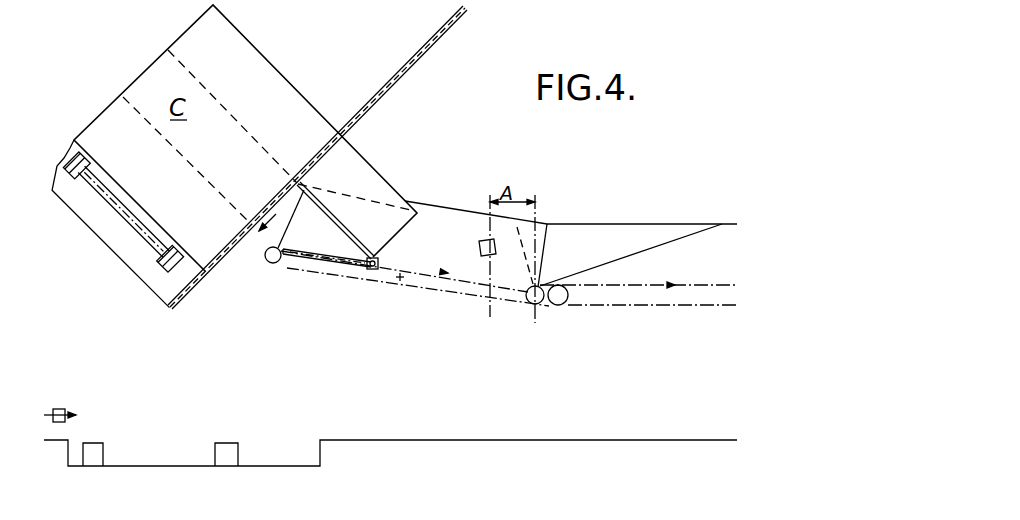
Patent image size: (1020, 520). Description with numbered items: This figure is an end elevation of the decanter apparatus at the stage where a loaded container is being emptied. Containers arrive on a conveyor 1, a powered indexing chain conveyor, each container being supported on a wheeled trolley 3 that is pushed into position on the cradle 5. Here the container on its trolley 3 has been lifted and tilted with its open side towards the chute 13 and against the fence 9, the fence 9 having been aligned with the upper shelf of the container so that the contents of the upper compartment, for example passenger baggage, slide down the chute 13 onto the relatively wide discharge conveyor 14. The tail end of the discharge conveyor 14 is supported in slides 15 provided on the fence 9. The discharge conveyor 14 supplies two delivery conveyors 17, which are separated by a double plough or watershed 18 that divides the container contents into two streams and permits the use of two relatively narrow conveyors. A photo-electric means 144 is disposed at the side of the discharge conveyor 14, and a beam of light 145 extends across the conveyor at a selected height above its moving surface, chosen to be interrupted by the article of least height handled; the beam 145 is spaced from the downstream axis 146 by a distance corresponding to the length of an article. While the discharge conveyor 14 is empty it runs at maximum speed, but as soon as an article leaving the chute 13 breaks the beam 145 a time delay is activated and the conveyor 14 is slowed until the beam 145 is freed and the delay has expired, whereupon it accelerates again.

The conveyor 1 is at (50, 408).
The wheeled trolley 3 is at (72, 137).
The cradle 5 is at (120, 252).
The fence 9 is at (298, 186).
The chute 13 is at (372, 167).
The discharge conveyor 14 is at (449, 292).
The slides 15 is at (328, 265).
The delivery conveyors 17 is at (702, 287).
The double plough or watershed 18 is at (618, 224).
The photo-electric means 144 is at (480, 249).
The beam of light 145 is at (482, 242).
The downstream axis 146 is at (534, 296).